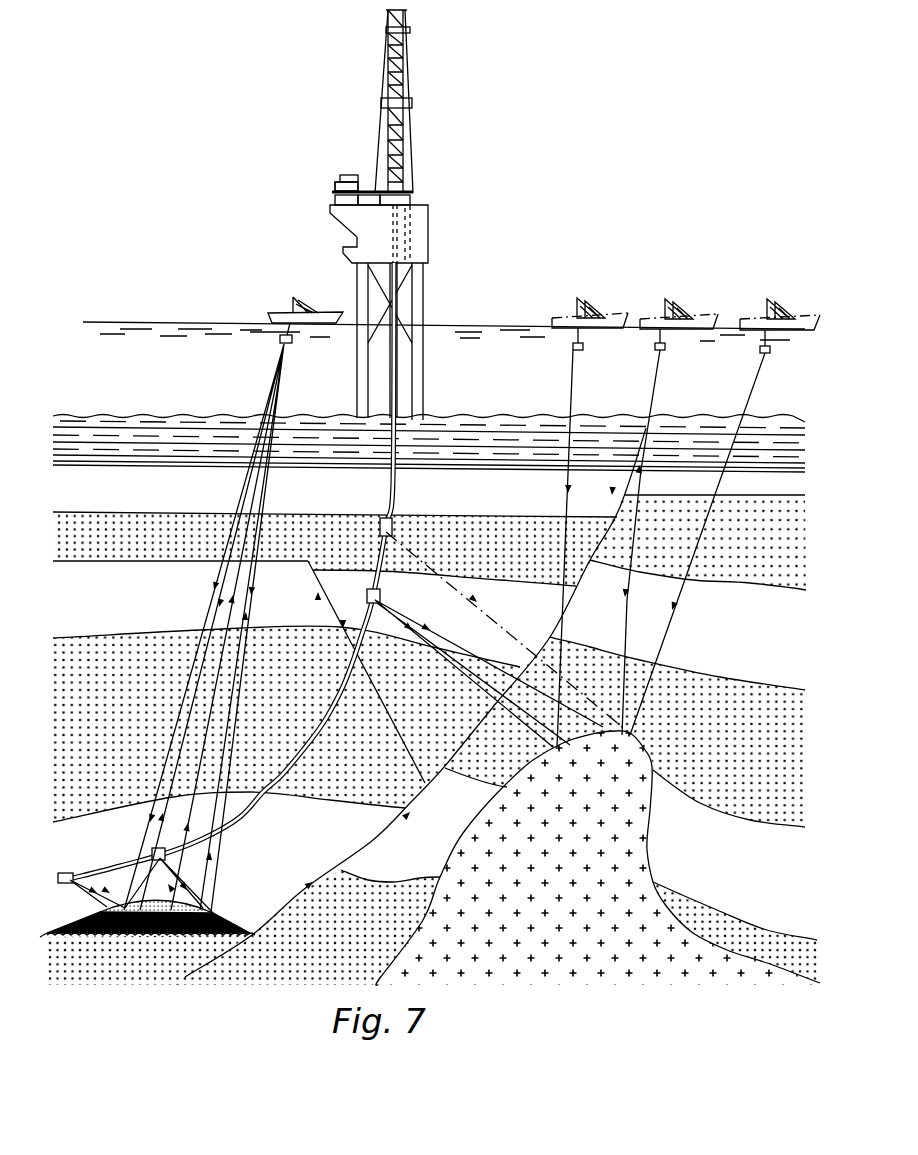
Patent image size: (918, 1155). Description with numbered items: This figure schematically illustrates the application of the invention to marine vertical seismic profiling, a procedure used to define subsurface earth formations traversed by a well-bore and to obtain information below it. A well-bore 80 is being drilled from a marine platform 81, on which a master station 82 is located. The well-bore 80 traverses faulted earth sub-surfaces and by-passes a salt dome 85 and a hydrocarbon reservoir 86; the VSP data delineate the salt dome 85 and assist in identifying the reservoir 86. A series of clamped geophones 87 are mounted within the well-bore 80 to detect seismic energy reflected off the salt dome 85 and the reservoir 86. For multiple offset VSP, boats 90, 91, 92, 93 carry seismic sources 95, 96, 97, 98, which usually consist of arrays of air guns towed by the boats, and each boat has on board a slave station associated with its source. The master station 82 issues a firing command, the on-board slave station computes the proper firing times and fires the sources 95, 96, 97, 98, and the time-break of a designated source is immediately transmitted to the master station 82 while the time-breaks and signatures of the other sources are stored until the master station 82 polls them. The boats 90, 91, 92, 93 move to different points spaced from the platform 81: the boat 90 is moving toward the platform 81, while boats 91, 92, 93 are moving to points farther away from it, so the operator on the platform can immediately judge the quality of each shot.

The well-bore 80 is at (399, 480).
The marine platform 81 is at (426, 184).
The master station 82 is at (332, 192).
The salt dome 85 is at (649, 850).
The hydrocarbon reservoir 86 is at (228, 908).
The geophones 87 is at (380, 525).
The boat 90 is at (284, 312).
The boat 91 is at (562, 316).
The boat 92 is at (655, 316).
The boat 93 is at (757, 316).
The seismic source 95 is at (292, 343).
The seismic source 96 is at (583, 348).
The seismic source 97 is at (665, 348).
The seismic source 98 is at (770, 352).